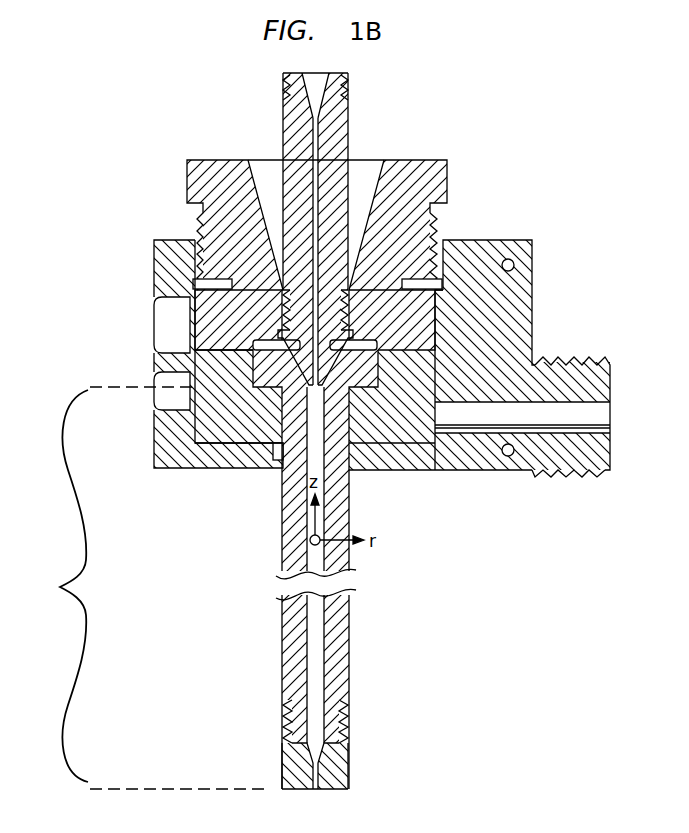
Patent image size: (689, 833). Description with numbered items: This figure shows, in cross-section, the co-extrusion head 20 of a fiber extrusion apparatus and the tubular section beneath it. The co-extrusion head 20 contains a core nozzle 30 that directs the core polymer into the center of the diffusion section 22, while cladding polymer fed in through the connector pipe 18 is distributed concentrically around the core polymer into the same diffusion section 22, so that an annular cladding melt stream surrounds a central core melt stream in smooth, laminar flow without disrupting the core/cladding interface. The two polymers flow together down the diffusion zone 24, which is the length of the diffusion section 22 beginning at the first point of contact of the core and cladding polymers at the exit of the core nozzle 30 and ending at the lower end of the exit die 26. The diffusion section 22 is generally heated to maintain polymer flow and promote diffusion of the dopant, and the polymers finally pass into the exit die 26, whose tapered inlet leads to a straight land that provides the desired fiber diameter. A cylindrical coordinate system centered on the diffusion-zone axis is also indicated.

The connector pipe 18 is at (588, 375).
The co-extrusion head 20 is at (443, 305).
The diffusion section 22 is at (282, 530).
The diffusion zone 24 is at (149, 588).
The exit die 26 is at (346, 770).
The core nozzle 30 is at (349, 134).